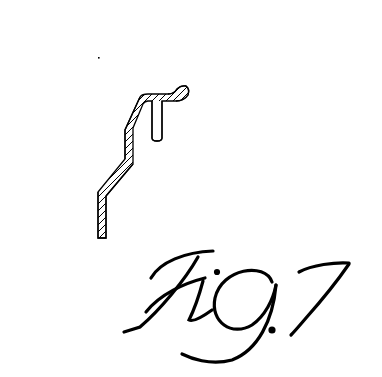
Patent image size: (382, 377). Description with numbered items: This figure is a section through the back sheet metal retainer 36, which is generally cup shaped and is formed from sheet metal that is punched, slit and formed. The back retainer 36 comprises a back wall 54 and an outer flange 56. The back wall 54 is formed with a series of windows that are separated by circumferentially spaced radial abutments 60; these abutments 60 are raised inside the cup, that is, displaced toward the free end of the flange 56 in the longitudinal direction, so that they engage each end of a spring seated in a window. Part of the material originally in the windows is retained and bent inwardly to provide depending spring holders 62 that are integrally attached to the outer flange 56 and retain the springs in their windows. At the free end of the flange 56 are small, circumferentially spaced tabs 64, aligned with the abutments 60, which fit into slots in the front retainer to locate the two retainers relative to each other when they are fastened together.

The outer flange 56 is at (152, 94).
The tabs 64 is at (190, 88).
The depending spring holders 62 is at (162, 130).
The radial abutments 60 is at (125, 145).
The back sheet metal retainer 36 is at (131, 152).
The back wall 54 is at (106, 200).